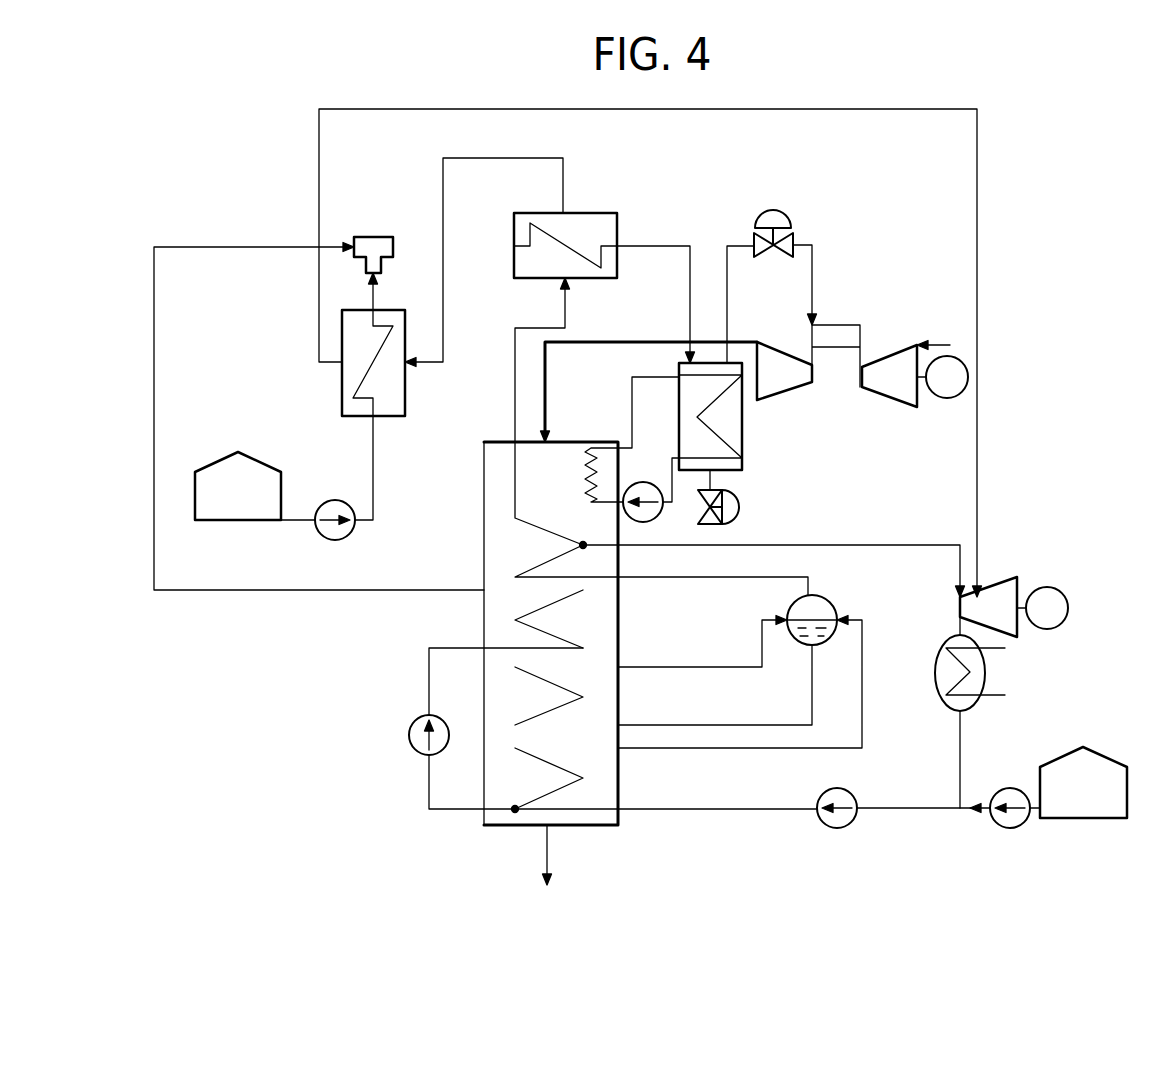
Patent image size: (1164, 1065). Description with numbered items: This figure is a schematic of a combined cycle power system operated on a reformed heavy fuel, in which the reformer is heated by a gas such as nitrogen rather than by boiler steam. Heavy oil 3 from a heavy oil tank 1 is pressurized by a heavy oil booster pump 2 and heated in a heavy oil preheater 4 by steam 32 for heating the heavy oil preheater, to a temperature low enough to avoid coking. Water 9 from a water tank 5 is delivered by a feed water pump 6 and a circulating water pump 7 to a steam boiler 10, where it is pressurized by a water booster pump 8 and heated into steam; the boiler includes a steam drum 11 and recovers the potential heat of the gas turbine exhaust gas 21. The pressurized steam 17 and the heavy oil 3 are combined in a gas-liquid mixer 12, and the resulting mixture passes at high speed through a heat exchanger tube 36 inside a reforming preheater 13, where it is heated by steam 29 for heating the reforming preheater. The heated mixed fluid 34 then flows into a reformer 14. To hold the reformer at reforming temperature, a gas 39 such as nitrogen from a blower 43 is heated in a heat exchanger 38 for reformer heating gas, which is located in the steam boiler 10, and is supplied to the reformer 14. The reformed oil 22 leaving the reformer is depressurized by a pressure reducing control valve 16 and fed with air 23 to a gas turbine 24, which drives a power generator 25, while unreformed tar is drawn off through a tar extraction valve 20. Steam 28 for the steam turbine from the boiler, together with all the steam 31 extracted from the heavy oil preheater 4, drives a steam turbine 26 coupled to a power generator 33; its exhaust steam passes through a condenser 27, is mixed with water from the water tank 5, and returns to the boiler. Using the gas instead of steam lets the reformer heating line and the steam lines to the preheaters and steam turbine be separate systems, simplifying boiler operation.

The heavy oil tank 1 is at (238, 522).
The heavy oil booster pump 2 is at (337, 500).
The heavy oil 3 is at (374, 440).
The heavy oil preheater 4 is at (342, 388).
The water tank 5 is at (1082, 820).
The feed water pump 6 is at (1005, 830).
The circulating water pump 7 is at (838, 830).
The water booster pump 8 is at (408, 735).
The water 9 is at (755, 810).
The steam boiler 10 is at (492, 827).
The steam drum 11 is at (830, 602).
The gas-liquid mixer 12 is at (385, 236).
The reforming preheater 13 is at (596, 213).
The reformer 14 is at (742, 430).
The pressure reducing control valve 16 is at (790, 223).
The steam 17 is at (208, 246).
The tar extraction valve 20 is at (745, 500).
The gas turbine exhaust gas 21 is at (605, 342).
The reformed oil 22 is at (812, 282).
The air 23 is at (935, 345).
The gas turbine 24 is at (885, 395).
The power generator 25 is at (947, 398).
The steam turbine 26 is at (998, 577).
The condenser 27 is at (985, 675).
The steam for steam turbine 28 is at (910, 545).
The steam for heating reforming preheater 29 is at (515, 388).
The steam extracted from heavy oil preheater 31 is at (977, 252).
The steam for heating heavy oil preheater 32 is at (443, 298).
The power generator 33 is at (1068, 600).
The mixed fluid 34 is at (652, 246).
The heat exchanger tube 36 is at (555, 236).
The heat exchanger for reformer heating gas 38 is at (585, 470).
The gas 39 is at (632, 405).
The blower 43 is at (646, 482).